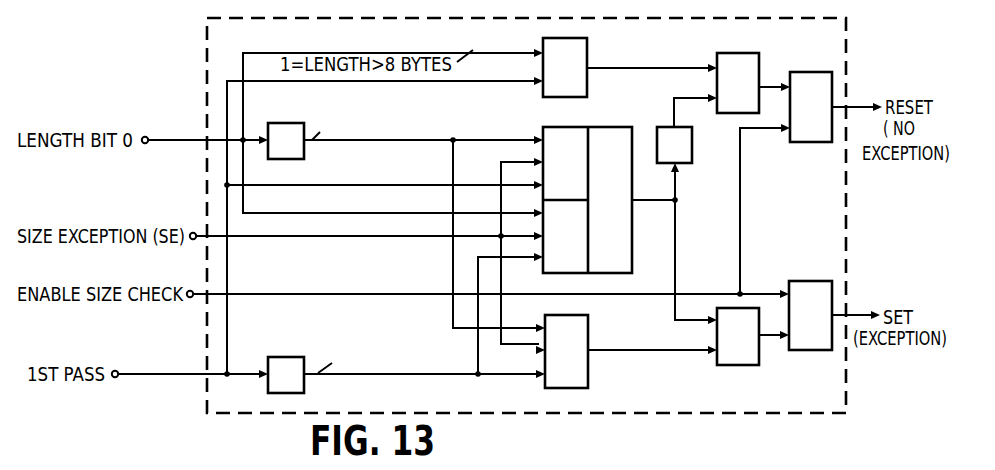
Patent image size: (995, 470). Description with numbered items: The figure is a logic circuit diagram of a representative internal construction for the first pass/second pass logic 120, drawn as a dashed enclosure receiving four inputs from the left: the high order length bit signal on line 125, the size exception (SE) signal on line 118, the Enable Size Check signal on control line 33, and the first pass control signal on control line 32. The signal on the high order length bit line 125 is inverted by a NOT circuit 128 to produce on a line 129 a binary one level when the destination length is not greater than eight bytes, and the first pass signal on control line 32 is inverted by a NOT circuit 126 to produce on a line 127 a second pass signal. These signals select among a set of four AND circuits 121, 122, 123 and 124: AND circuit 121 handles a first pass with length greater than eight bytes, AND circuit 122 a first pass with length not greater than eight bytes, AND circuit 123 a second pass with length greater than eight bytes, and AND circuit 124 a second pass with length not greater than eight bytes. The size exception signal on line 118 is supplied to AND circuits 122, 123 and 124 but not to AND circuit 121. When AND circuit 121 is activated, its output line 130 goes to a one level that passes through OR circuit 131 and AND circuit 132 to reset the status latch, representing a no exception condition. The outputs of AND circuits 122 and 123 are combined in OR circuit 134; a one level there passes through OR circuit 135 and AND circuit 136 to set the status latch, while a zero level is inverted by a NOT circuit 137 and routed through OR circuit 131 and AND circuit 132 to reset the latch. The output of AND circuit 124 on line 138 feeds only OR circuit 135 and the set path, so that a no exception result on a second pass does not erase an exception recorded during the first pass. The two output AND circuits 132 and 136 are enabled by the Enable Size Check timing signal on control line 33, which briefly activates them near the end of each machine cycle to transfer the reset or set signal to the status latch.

The first pass/second pass logic 120 is at (207, 33).
The high order length bit line 125 is at (188, 141).
The NOT circuit 128 is at (285, 123).
The line 129 is at (400, 140).
The AND circuit 121 is at (585, 50).
The AND circuit output line 130 is at (615, 68).
The AND circuit 122 is at (573, 128).
The OR circuit 134 is at (623, 158).
The AND circuit 123 is at (562, 262).
The size exception input line 118 is at (287, 233).
The control line 33 is at (277, 296).
The control line 32 is at (178, 372).
The NOT circuit 126 is at (282, 357).
The line 127 is at (448, 372).
The AND circuit 124 is at (580, 327).
The AND circuit output line 138 is at (656, 349).
The OR circuit 135 is at (725, 357).
The AND circuit 136 is at (798, 281).
The NOT circuit 137 is at (685, 156).
The OR circuit 131 is at (750, 53).
The AND circuit 132 is at (798, 72).